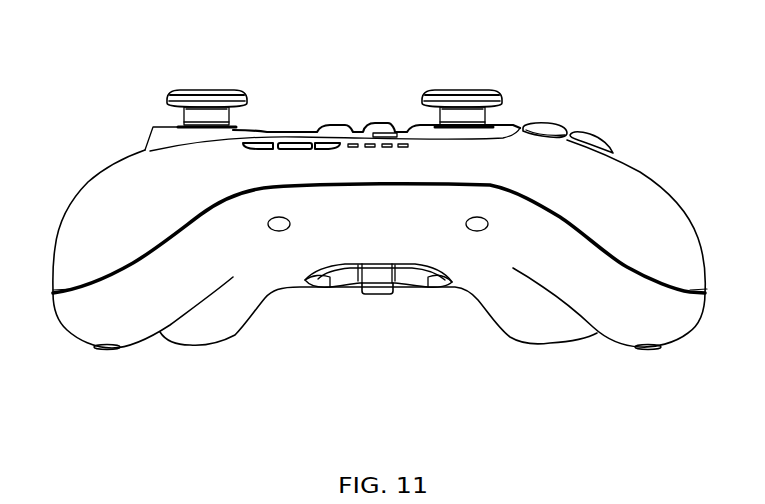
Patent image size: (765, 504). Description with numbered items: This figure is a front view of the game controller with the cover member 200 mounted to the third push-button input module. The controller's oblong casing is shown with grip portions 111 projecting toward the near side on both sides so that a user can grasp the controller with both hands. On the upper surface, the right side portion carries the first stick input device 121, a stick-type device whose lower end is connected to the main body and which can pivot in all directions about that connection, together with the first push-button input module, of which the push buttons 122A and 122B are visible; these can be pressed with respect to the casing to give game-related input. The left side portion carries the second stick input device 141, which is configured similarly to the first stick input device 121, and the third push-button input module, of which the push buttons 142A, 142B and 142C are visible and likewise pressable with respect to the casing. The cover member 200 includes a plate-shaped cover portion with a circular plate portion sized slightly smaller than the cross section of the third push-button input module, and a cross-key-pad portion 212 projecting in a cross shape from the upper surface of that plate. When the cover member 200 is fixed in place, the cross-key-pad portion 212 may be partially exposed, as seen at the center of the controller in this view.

The grip portion 111 is at (87, 335).
The first stick input device 121 is at (468, 92).
The push button 122A is at (593, 130).
The push button 122B is at (538, 122).
The second stick input device 141 is at (207, 92).
The push button 142A is at (342, 140).
The push button 142B is at (305, 140).
The push button 142C is at (267, 140).
The cover member 200 is at (342, 303).
The cross-key-pad portion 212 is at (373, 290).